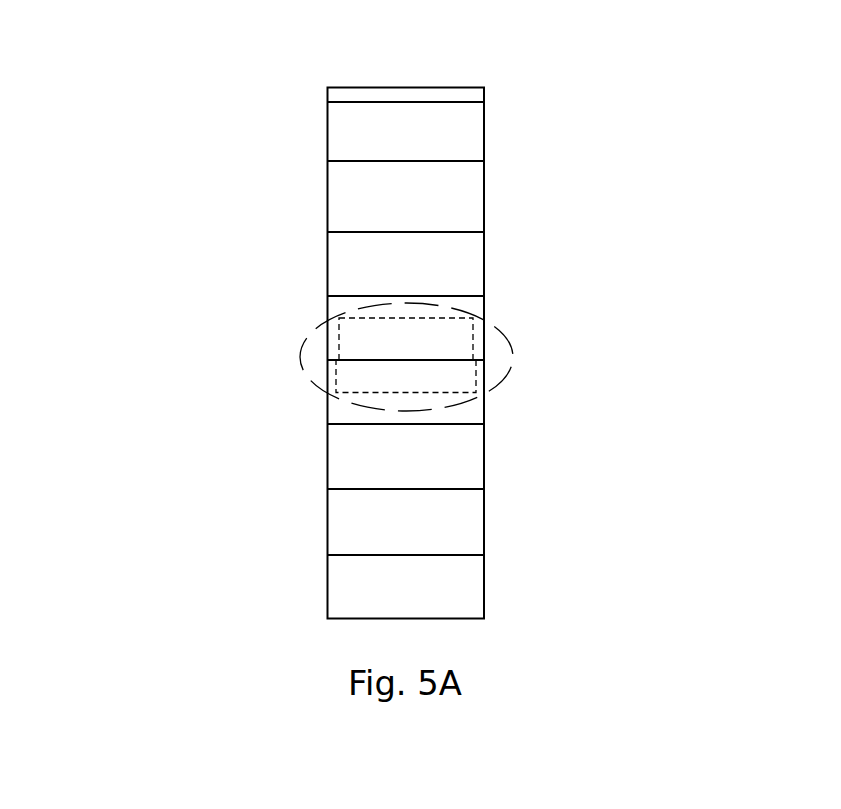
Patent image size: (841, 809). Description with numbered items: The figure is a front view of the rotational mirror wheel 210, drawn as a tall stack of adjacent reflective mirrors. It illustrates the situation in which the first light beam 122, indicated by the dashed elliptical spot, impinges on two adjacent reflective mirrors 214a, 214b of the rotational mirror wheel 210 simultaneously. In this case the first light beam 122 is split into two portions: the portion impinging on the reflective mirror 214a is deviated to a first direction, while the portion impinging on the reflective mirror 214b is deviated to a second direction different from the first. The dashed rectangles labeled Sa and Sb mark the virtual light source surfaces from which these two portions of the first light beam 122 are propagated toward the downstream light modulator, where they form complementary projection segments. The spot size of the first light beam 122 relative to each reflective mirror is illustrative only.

The rotational mirror wheel 210 is at (107, 82).
The first light beam 122 is at (302, 379).
The reflective mirror 214a is at (467, 303).
The reflective mirror 214b is at (467, 417).